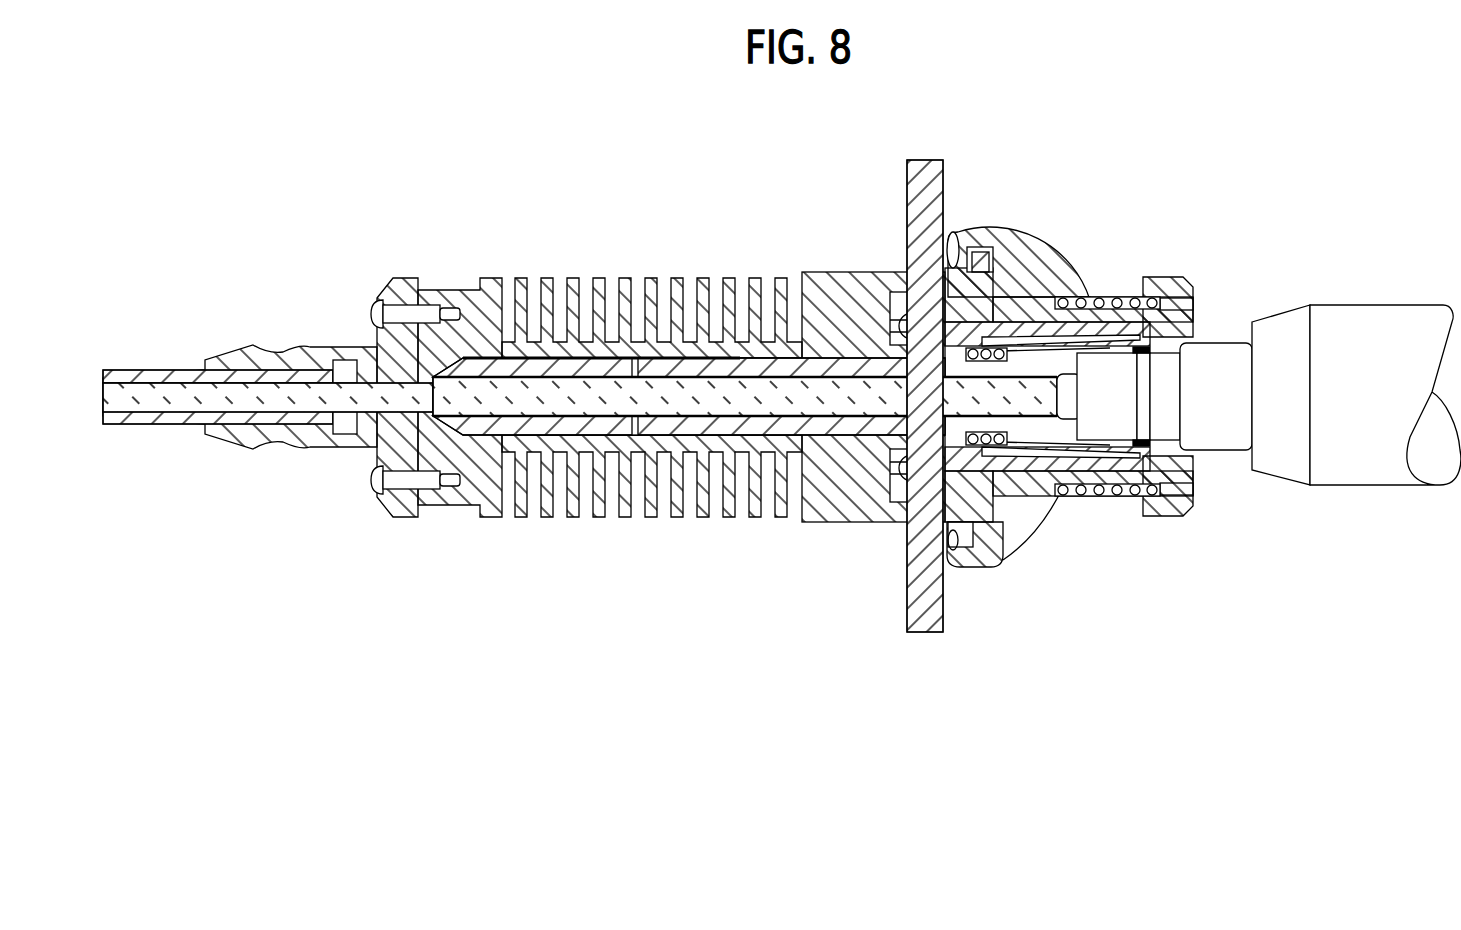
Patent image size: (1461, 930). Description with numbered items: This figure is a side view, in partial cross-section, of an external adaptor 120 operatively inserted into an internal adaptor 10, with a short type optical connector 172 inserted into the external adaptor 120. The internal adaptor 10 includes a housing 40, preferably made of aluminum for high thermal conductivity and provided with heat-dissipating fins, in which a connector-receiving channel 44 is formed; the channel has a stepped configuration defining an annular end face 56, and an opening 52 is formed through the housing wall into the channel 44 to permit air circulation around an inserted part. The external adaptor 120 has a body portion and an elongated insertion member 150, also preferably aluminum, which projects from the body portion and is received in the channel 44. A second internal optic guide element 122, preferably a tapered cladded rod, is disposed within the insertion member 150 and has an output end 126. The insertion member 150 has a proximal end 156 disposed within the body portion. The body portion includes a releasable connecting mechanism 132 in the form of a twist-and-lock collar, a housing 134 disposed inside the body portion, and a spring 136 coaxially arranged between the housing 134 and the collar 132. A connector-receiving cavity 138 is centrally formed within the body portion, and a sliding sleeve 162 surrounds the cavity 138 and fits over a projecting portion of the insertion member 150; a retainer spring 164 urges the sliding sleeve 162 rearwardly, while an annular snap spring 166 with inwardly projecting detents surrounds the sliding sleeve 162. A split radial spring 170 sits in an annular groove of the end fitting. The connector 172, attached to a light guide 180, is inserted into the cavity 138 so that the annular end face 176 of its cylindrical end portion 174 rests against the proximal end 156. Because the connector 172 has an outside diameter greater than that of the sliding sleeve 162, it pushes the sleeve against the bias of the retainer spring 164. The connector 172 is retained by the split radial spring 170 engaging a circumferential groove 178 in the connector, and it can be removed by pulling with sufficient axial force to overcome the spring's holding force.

The internal adaptor 10 is at (400, 275).
The housing 40 is at (597, 275).
The connector-receiving channel 44 is at (531, 355).
The opening 52 is at (916, 318).
The annular end face 56 is at (955, 297).
The external adaptor 120 is at (796, 355).
The second internal optic guide element 122 is at (535, 416).
The output end 126 is at (1067, 378).
The releasable connecting mechanism 132 is at (1006, 219).
The housing 134 is at (1016, 305).
The spring 136 is at (1153, 512).
The connector-receiving cavity 138 is at (1170, 448).
The elongated insertion member 150 is at (587, 436).
The proximal end 156 is at (1092, 487).
The sliding sleeve 162 is at (1030, 470).
The retainer spring 164 is at (900, 522).
The annular snap spring 166 is at (1133, 487).
The split radial spring 170 is at (1143, 285).
The short type optical connector 172 is at (1250, 310).
The cylindrical end portion 174 is at (1152, 367).
The annular end face 176 is at (1045, 440).
The circumferential groove 178 is at (1150, 405).
The light guide 180 is at (1365, 485).